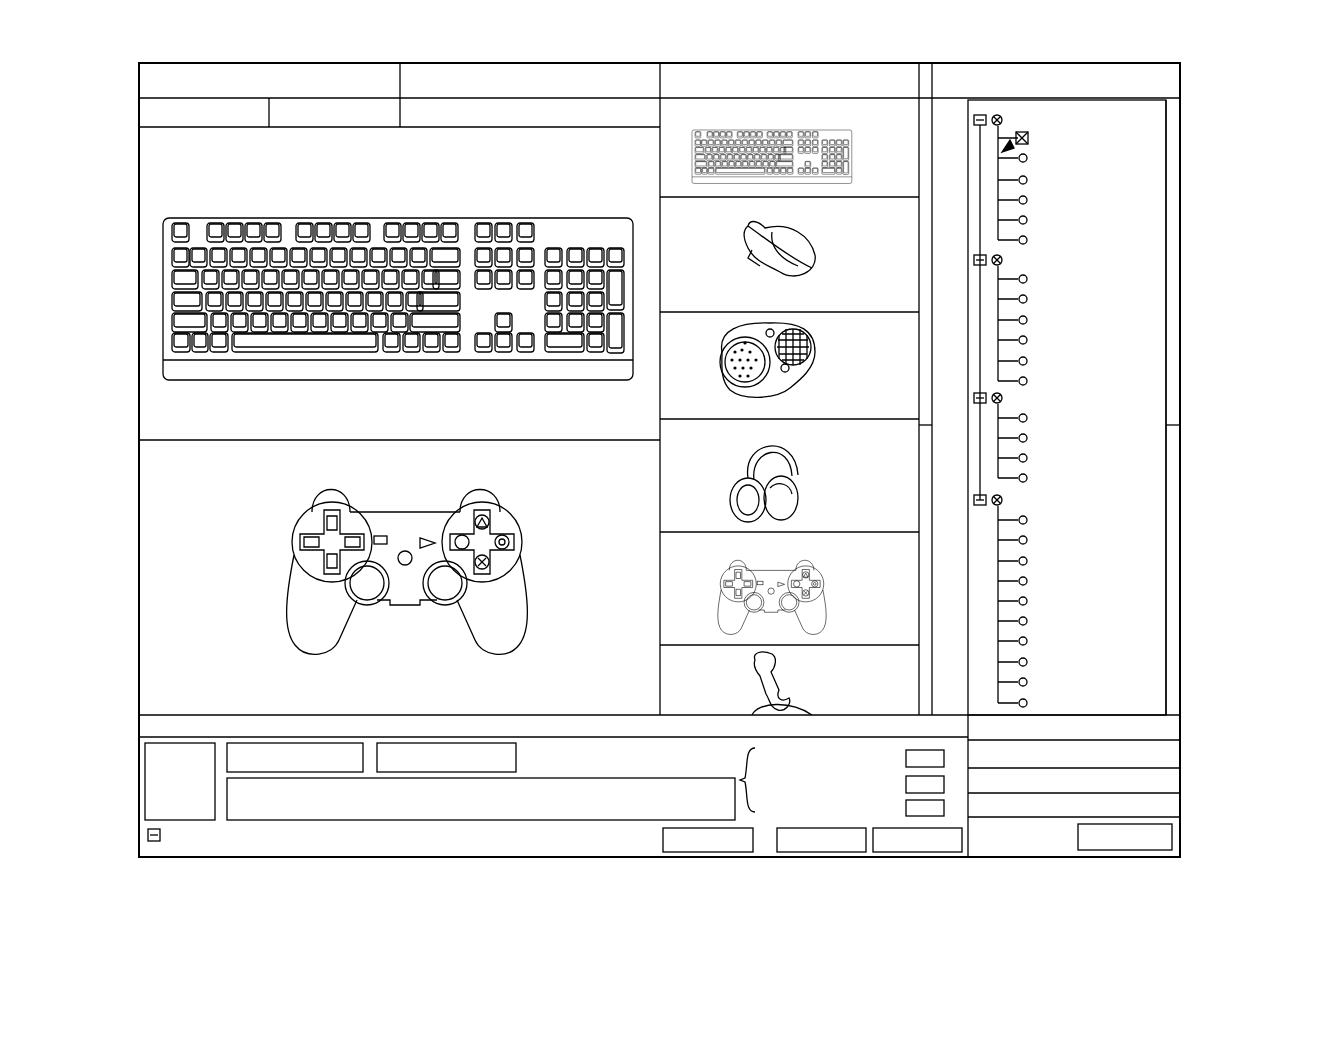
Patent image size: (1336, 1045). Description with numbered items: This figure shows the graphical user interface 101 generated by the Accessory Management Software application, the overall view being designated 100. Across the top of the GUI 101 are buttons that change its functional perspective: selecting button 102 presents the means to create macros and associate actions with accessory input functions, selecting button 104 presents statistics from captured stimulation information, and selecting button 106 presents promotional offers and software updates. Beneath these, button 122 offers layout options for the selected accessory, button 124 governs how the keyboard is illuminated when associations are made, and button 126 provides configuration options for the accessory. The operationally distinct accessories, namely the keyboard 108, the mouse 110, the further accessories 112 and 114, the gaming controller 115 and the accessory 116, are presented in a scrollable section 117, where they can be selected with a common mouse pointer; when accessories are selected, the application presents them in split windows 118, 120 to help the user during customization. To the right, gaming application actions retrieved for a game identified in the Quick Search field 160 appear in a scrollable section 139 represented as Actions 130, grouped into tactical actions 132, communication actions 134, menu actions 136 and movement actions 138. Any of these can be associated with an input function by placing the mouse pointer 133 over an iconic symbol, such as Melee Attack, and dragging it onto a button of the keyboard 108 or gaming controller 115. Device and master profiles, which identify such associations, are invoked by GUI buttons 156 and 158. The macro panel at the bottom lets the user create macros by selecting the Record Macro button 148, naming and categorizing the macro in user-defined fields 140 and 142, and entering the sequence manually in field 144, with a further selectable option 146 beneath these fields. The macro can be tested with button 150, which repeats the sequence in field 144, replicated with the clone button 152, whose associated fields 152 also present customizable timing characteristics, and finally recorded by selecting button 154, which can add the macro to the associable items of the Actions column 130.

The user interface 100 is at (1271, 740).
The graphical user interface 101 is at (133, 273).
The button 102 is at (172, 85).
The button 104 is at (433, 87).
The button 106 is at (690, 85).
The keyboard 108 is at (820, 185).
The mouse 110 is at (748, 240).
The accessory 112 is at (812, 380).
The accessory 114 is at (800, 490).
The gaming controller 115 is at (830, 595).
The accessory 116 is at (790, 672).
The scrollable section 117 is at (925, 300).
The split window 118 is at (194, 389).
The split window 120 is at (215, 562).
The button 122 is at (257, 115).
The illumination sub-tab 124 is at (350, 117).
The button 126 is at (522, 125).
The Actions 130 is at (1158, 85).
The tactical actions 132 is at (1063, 120).
The mouse pointer 133 is at (1004, 150).
The communication actions 134 is at (1052, 260).
The menu actions 136 is at (1060, 402).
The movement actions 138 is at (1083, 498).
The scrollable section 139 is at (1180, 372).
The user-defined field 140 is at (293, 752).
The user-defined field 142 is at (423, 752).
The field 144 is at (430, 818).
The track mouse movement checkbox 146 is at (148, 835).
The Record Macro button 148 is at (183, 752).
The button 150 is at (683, 852).
The clone button 152 is at (745, 780).
The button 154 is at (915, 852).
The GUI button 156 is at (1168, 776).
The GUI button 158 is at (1168, 802).
The Quick Search field 160 is at (1110, 850).